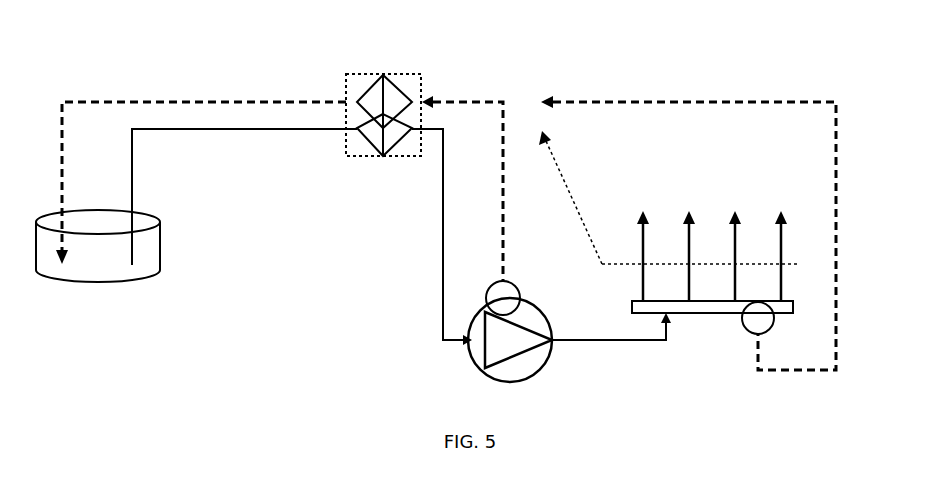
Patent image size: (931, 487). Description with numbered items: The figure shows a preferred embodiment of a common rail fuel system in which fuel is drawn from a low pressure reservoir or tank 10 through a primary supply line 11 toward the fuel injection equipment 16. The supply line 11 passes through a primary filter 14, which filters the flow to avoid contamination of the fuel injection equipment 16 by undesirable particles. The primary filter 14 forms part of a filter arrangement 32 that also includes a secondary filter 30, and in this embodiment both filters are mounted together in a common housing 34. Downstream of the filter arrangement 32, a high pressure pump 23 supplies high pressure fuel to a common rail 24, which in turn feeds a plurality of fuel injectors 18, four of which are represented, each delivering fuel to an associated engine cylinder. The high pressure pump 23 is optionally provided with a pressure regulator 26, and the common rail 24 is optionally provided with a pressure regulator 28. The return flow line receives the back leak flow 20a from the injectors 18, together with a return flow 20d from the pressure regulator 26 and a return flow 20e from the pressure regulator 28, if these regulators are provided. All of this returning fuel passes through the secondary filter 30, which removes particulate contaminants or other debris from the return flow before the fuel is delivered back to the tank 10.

The tank 10 is at (153, 257).
The primary supply line 11 is at (245, 132).
The primary filter 14 is at (378, 140).
The fuel injection equipment 16 is at (804, 288).
The fuel injectors 18 is at (782, 228).
The back leak flow 20a is at (578, 190).
The return flow from pressure regulator of high pressure pump 20d is at (502, 271).
The return flow from pressure regulator of common rail 20e is at (683, 100).
The high pressure pump 23 is at (548, 360).
The common rail 24 is at (690, 314).
The pressure regulator 26 is at (522, 290).
The pressure regulator 28 is at (752, 328).
The secondary filter 30 is at (390, 95).
The filter arrangement 32 is at (390, 170).
The common housing 34 is at (352, 72).